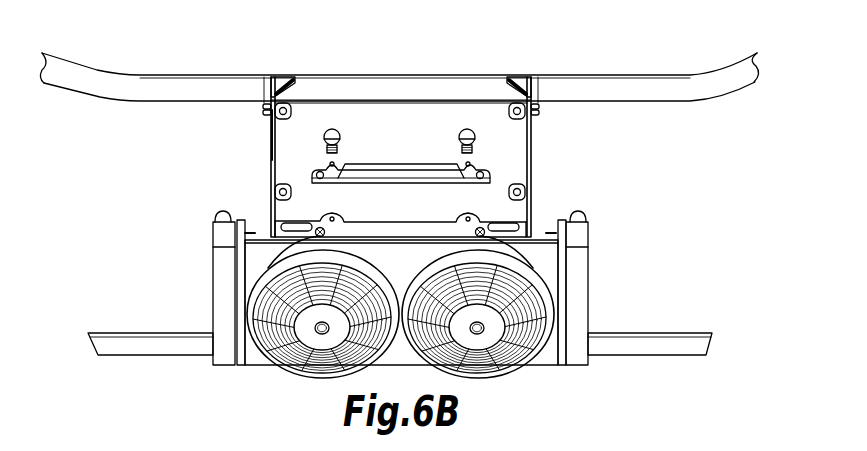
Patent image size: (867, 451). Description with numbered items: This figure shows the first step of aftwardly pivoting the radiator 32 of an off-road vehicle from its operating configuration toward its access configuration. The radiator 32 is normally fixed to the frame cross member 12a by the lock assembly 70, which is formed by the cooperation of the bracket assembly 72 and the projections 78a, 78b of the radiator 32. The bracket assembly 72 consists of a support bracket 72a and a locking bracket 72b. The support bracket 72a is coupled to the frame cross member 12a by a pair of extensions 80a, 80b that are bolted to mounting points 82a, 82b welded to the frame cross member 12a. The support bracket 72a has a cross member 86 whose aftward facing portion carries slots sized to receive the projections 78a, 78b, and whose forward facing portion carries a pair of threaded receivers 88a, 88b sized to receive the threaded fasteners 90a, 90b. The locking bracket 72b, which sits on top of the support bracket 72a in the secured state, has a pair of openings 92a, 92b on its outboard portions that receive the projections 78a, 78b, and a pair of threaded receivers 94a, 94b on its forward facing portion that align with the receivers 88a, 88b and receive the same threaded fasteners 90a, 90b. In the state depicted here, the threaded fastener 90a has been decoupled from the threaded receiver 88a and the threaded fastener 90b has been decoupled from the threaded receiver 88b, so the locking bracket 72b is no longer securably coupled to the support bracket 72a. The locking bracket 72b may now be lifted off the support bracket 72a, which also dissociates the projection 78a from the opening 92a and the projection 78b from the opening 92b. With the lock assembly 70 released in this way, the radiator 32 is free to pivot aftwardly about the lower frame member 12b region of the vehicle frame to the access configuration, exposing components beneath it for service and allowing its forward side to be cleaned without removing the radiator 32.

The frame cross member 12a is at (629, 77).
The lower frame tube 12b is at (675, 338).
The radiator 32 is at (214, 305).
The lock assembly 70 is at (534, 163).
The bracket assembly 72 is at (268, 158).
The support bracket 72a is at (270, 133).
The locking bracket 72b is at (345, 176).
The projection 78a is at (268, 268).
The projection 78b is at (533, 268).
The extension 80a is at (271, 193).
The extension 80b is at (530, 193).
The mounting point 82a is at (283, 74).
The mounting point 82b is at (517, 74).
The cross member 86 is at (393, 230).
The threaded receiver 88a is at (332, 217).
The threaded receiver 88b is at (468, 217).
The threaded fastener 90a is at (332, 128).
The threaded fastener 90b is at (467, 128).
The opening 92a is at (318, 172).
The opening 92b is at (482, 172).
The threaded receiver 94a is at (339, 172).
The threaded receiver 94b is at (462, 164).